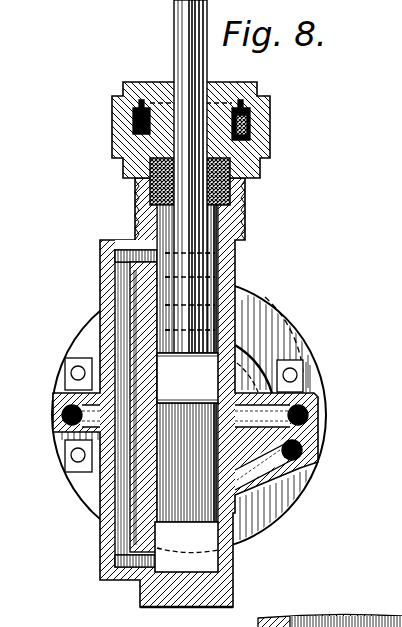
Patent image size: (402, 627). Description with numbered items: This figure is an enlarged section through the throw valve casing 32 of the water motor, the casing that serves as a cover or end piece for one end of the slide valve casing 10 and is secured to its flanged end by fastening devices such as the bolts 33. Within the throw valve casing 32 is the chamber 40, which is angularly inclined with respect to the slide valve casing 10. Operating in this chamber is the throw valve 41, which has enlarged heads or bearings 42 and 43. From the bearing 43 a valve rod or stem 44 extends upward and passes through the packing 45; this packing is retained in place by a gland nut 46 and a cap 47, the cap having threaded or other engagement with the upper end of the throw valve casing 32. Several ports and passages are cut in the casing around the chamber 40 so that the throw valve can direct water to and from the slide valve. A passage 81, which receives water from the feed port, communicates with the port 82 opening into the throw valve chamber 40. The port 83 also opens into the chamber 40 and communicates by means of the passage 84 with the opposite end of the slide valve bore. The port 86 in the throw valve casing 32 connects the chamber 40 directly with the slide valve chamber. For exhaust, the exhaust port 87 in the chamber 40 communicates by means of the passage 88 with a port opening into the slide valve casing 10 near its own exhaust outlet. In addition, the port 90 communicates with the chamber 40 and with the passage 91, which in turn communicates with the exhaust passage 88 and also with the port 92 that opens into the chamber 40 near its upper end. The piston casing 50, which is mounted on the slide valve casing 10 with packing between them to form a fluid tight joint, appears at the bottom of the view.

The valve rod or stem 44 is at (174, 32).
The gland nut 46 is at (258, 95).
The cap 47 is at (250, 118).
The packing 45 is at (232, 197).
The chamber 40 is at (210, 223).
The port 92 is at (135, 258).
The port 86 is at (185, 330).
The slide valve casing 10 is at (268, 318).
The port 82 is at (258, 386).
The bolts 33 is at (303, 368).
The exhaust port 87 is at (86, 358).
The passage 88 is at (60, 413).
The passage 81 is at (320, 410).
The passage 84 is at (320, 452).
The enlarged head or bearing 43 is at (158, 376).
The throw valve 41 is at (140, 506).
The passage 91 is at (122, 534).
The enlarged head or bearing 42 is at (156, 540).
The port 83 is at (218, 492).
The port 90 is at (150, 565).
The throw valve casing 32 is at (187, 597).
The piston casing 50 is at (285, 616).